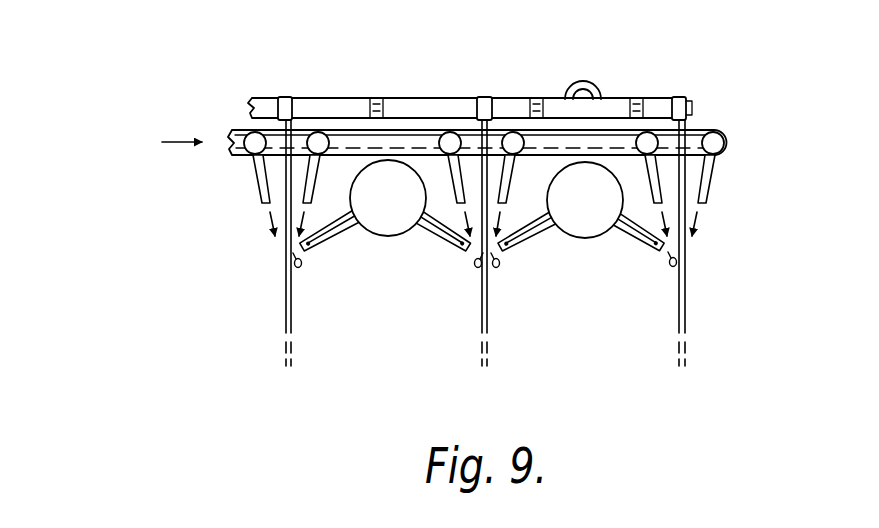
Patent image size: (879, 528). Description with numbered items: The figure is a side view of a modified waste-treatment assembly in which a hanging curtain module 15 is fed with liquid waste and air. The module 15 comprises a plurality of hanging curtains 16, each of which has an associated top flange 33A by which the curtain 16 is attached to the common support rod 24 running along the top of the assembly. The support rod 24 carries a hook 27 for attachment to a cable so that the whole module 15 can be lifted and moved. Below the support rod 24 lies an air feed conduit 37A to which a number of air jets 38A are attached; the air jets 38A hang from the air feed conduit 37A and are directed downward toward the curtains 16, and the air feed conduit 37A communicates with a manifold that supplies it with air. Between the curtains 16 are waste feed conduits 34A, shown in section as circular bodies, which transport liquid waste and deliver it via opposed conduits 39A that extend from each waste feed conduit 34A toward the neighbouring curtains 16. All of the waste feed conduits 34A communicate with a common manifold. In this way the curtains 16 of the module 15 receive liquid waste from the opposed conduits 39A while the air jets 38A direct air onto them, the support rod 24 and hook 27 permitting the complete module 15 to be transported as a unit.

The support rod 24 is at (392, 101).
The top flange 33A is at (484, 97).
The hook 27 is at (580, 79).
The air feed conduit 37A is at (694, 134).
The air jet 38A is at (650, 181).
The waste feed conduit 34A is at (378, 223).
The opposed conduit 39A is at (648, 240).
The hanging curtain 16 is at (288, 315).
The hanging curtain module 15 is at (466, 282).